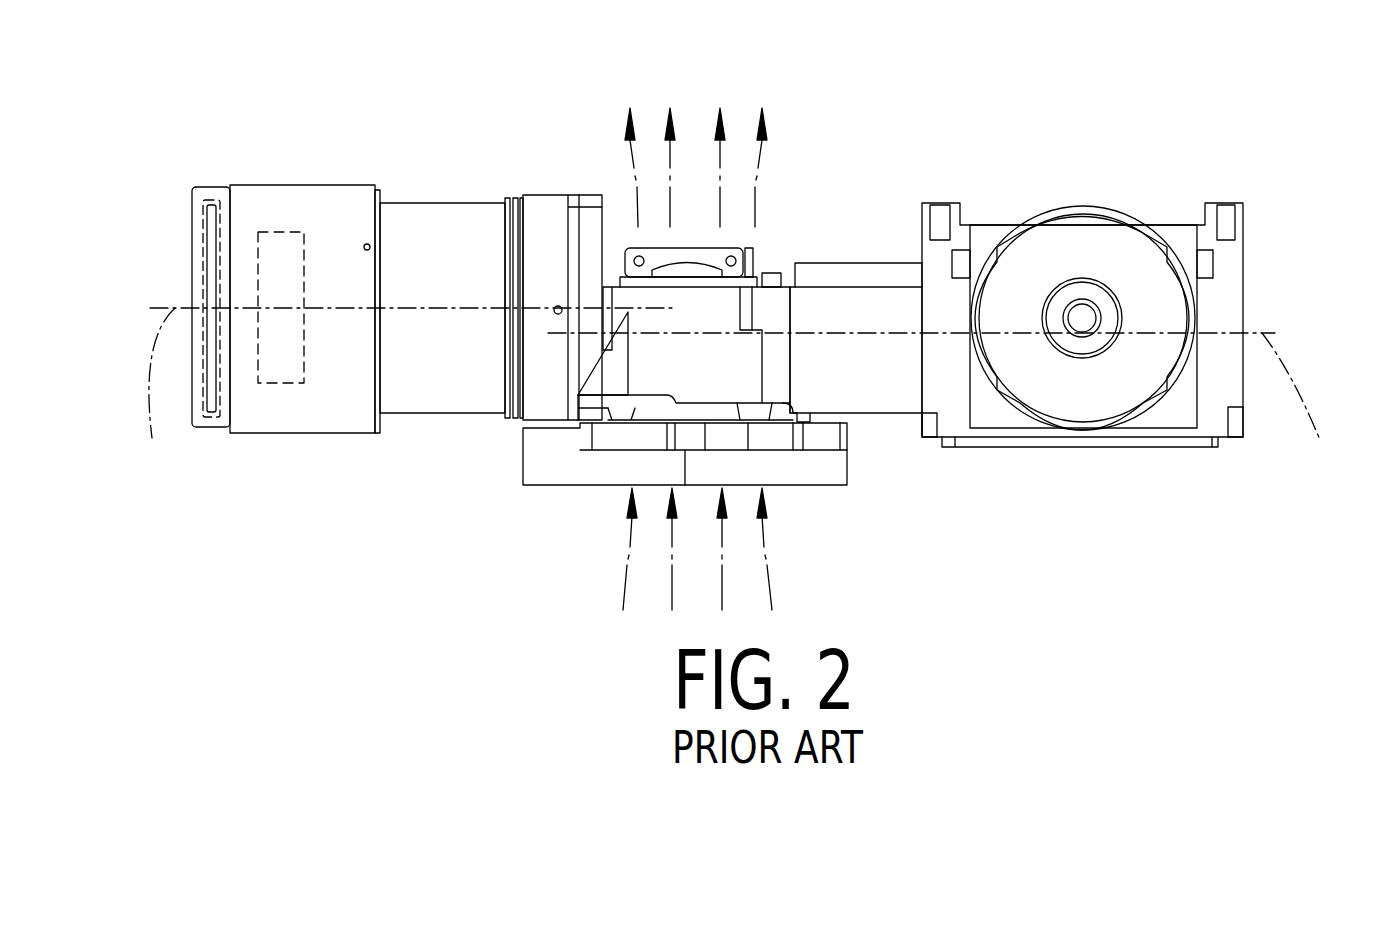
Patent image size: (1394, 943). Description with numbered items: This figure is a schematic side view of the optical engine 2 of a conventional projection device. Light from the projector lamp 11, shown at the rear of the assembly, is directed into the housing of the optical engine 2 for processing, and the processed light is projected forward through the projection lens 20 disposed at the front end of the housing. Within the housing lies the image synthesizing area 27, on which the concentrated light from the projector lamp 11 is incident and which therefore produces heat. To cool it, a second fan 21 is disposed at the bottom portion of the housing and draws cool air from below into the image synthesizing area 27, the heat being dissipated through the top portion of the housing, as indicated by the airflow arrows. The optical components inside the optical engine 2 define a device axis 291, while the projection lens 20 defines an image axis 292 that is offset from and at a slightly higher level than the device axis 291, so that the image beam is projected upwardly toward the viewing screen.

The optical engine 2 is at (515, 427).
The projection lens 20 is at (437, 225).
The second fan 21 is at (838, 467).
The image synthesizing area 27 is at (760, 262).
The projector lamp 11 is at (1068, 243).
The device axis 291 is at (966, 405).
The image axis 292 is at (408, 403).